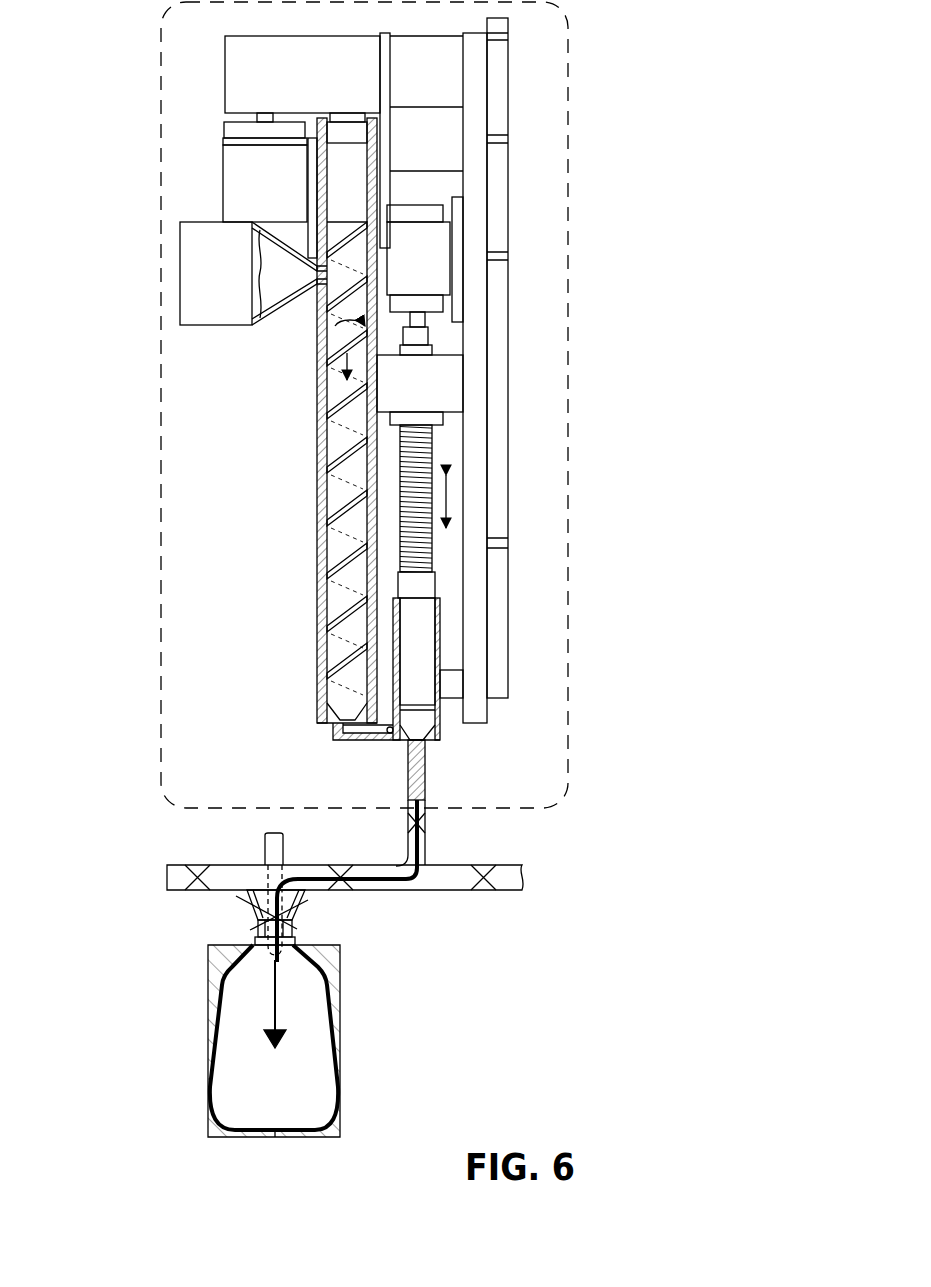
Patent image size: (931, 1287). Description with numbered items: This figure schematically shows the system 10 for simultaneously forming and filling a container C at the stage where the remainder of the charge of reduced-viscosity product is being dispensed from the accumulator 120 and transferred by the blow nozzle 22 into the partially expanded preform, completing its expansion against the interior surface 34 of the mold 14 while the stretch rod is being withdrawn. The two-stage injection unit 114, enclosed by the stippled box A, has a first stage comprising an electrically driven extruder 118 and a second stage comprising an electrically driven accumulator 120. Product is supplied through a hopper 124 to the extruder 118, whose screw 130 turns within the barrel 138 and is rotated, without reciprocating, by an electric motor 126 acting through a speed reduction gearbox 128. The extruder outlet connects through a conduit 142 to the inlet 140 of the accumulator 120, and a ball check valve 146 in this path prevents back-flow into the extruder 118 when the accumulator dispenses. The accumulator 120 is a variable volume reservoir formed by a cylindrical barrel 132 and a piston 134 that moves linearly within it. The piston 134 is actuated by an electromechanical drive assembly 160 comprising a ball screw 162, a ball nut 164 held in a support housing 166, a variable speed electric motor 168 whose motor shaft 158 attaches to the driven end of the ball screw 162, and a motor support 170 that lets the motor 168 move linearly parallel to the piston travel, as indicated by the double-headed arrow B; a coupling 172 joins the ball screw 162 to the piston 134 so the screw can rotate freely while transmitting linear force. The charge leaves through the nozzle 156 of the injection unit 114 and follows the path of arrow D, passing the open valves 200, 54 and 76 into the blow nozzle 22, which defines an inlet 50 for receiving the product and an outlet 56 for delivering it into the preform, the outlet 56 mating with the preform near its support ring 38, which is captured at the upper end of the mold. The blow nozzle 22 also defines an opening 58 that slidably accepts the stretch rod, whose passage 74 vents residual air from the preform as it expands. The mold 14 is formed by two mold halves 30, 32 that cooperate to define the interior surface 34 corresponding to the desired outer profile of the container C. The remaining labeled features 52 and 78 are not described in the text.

The system 10 is at (140, 822).
The mold 14 is at (148, 998).
The blow nozzle 22 is at (240, 903).
The mold half 30 is at (210, 1127).
The mold half 32 is at (341, 1133).
The interior surface 34 is at (223, 1057).
The support ring 38 is at (227, 940).
The inlet 50 is at (242, 892).
The platen 52 is at (483, 891).
The valve 54 is at (347, 891).
The outlet 56 is at (245, 935).
The opening 58 is at (263, 865).
The passage 74 is at (283, 840).
The valve 76 is at (297, 921).
The fastener 78 is at (193, 890).
The two-stage injection unit 114 is at (235, 725).
The extruder 118 is at (298, 382).
The accumulator 120 is at (496, 741).
The hopper 124 is at (199, 282).
The electric motor 126 is at (248, 198).
The speed reduction gearbox 128 is at (295, 88).
The screw 130 is at (337, 597).
The cylindrical barrel 132 is at (437, 638).
The piston 134 is at (427, 669).
The barrel 138 is at (322, 665).
The inlet 140 is at (398, 742).
The conduit 142 is at (330, 735).
The ball check valve 146 is at (388, 737).
The nozzle 156 is at (428, 758).
The motor shaft 158 is at (427, 318).
The electromechanical drive assembly 160 is at (480, 361).
The ball screw 162 is at (432, 452).
The ball nut 164 is at (438, 422).
The support housing 166 is at (401, 385).
The variable speed electric motor 168 is at (401, 256).
The motor support 170 is at (457, 233).
The coupling 172 is at (427, 585).
The valve 200 is at (422, 823).
The stippled box A is at (160, 465).
The double-headed arrow B is at (446, 503).
The container C is at (330, 1018).
The arrow D is at (287, 1035).